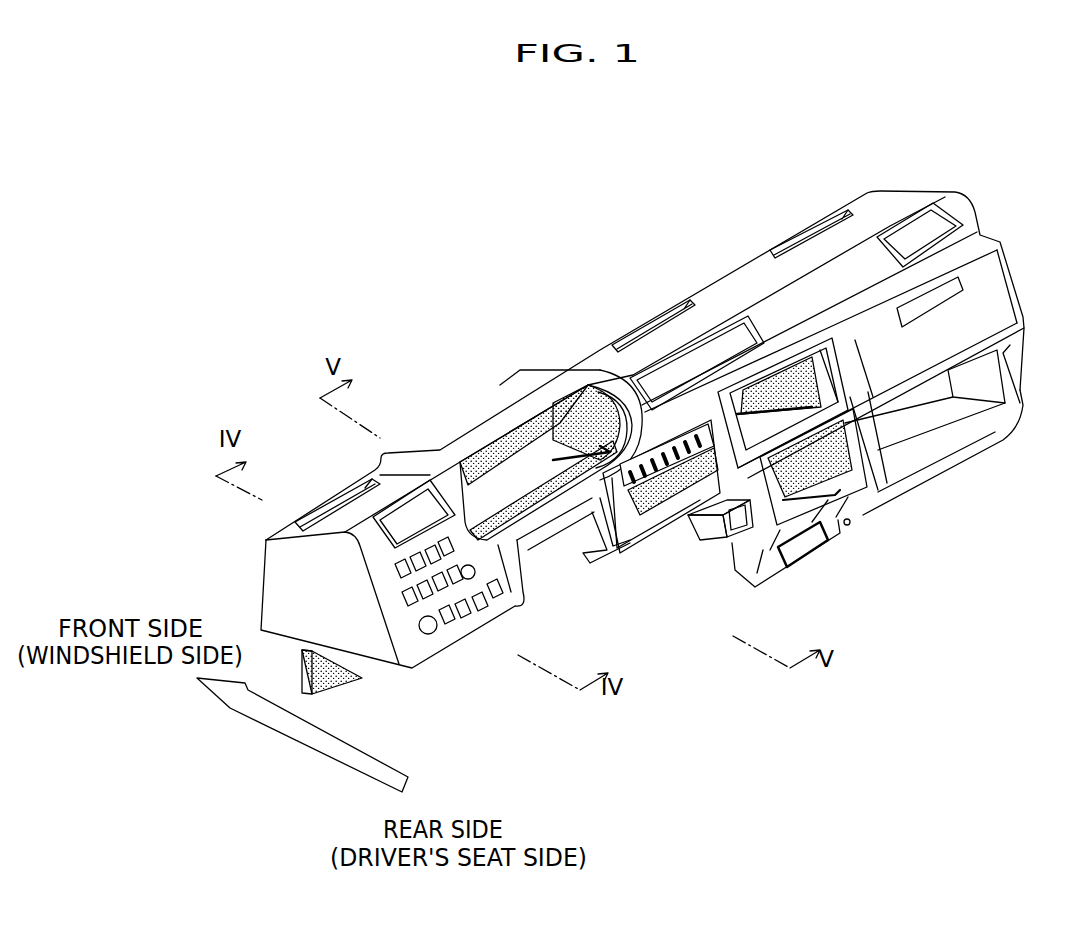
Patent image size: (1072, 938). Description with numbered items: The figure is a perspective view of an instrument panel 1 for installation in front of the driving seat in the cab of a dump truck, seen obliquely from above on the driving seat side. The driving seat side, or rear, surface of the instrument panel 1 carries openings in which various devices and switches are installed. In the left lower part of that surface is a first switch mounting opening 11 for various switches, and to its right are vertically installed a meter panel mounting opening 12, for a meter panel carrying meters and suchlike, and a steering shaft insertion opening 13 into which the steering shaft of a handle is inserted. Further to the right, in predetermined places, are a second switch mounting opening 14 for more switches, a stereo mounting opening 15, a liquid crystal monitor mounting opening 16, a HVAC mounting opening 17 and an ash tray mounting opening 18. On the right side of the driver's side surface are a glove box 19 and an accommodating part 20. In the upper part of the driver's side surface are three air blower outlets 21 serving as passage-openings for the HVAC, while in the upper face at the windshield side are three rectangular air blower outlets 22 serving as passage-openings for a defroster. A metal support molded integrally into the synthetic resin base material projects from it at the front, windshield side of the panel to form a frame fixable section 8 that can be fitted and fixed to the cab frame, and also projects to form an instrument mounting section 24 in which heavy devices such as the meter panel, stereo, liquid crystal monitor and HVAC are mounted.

The instrument panel 1 is at (858, 160).
The frame fixable section 8 is at (335, 680).
The first switch mounting opening 11 is at (501, 604).
The meter panel mounting opening 12 is at (500, 473).
The steering shaft insertion opening 13 is at (557, 556).
The second switch mounting opening 14 is at (598, 362).
The stereo mounting opening 15 is at (668, 498).
The liquid crystal monitor mounting opening 16 is at (755, 427).
The HVAC mounting opening 17 is at (793, 510).
The ash tray mounting opening 18 is at (810, 565).
The glove box 19 is at (987, 300).
The accommodating part 20 is at (985, 380).
The air blower outlets 21 is at (400, 507).
The rectangular air blower outlets 22 is at (322, 512).
The instrument mounting section 24 is at (560, 430).